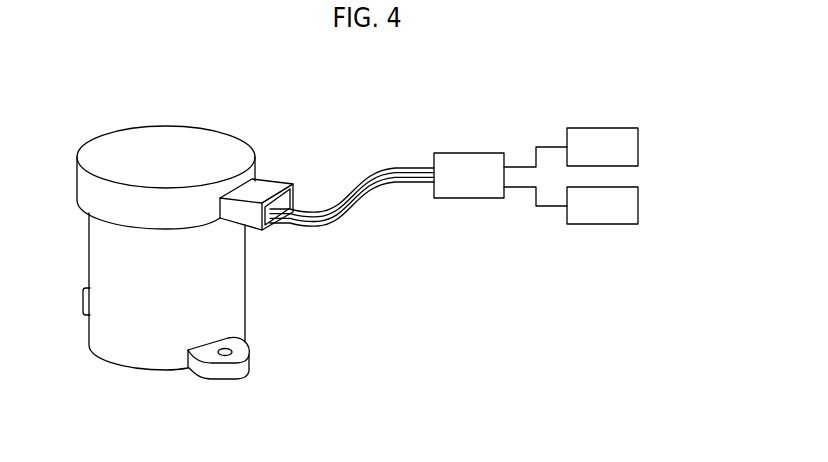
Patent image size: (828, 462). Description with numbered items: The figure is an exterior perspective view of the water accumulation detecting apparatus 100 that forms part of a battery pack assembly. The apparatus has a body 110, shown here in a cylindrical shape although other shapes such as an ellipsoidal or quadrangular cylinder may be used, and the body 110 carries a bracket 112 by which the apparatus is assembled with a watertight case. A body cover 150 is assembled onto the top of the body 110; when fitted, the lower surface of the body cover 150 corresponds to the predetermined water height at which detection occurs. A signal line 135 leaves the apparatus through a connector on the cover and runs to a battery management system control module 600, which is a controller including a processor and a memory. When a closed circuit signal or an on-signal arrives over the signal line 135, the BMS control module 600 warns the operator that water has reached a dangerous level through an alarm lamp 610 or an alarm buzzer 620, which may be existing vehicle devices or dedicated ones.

The water accumulation detecting apparatus 100 is at (175, 255).
The body 110 is at (153, 353).
The bracket 112 is at (235, 378).
The signal line 135 is at (315, 211).
The body cover 150 is at (167, 133).
The BMS control module 600 is at (467, 153).
The alarm lamp 610 is at (638, 145).
The alarm buzzer 620 is at (638, 205).